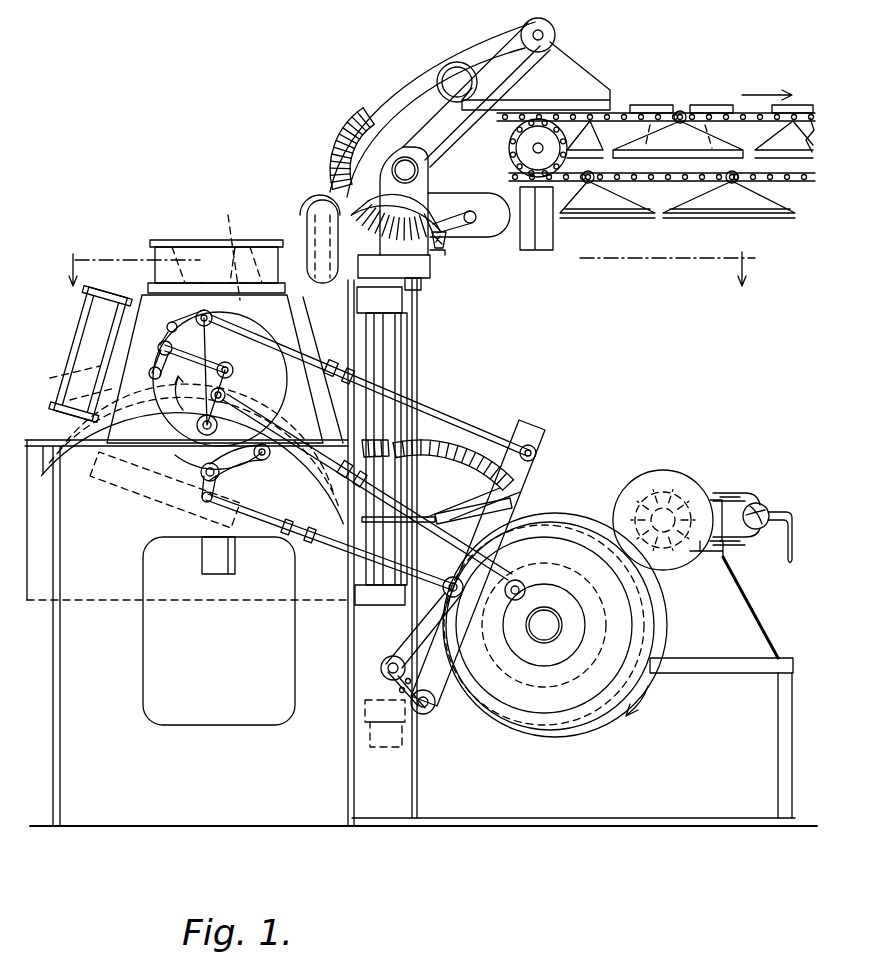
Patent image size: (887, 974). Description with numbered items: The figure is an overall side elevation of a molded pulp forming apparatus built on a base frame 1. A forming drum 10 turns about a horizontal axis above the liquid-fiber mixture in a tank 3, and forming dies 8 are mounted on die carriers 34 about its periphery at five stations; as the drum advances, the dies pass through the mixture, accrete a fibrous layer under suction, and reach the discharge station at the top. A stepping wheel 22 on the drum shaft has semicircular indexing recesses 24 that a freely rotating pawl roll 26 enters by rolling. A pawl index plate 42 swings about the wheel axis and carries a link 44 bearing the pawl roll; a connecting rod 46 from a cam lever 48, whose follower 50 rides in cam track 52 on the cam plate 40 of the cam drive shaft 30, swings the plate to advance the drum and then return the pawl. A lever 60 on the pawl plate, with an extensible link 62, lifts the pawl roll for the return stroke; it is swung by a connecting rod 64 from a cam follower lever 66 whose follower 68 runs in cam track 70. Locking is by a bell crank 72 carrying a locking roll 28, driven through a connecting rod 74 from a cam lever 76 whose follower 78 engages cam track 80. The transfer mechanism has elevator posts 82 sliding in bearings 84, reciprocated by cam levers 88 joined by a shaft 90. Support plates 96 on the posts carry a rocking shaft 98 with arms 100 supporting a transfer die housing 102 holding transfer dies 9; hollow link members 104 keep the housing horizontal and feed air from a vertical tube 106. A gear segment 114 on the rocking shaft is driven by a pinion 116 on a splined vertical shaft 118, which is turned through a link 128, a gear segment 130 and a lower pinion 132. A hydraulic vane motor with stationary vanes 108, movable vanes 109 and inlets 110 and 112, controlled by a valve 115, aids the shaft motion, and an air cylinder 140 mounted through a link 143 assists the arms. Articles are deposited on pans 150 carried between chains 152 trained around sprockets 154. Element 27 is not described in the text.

The base frame 1 is at (168, 818).
The tank 3 is at (137, 650).
The forming dies 8 is at (148, 300).
The transfer dies 9 is at (594, 104).
The forming drum 10 is at (244, 287).
The stepping wheel 22 is at (265, 355).
The indexing recesses 24 is at (219, 420).
The pawl roll 26 is at (154, 378).
The block 27 is at (230, 575).
The locking roll 28 is at (240, 467).
The cam drive shaft 30 is at (545, 632).
The die carriers 34 is at (215, 215).
The cam plate 40 is at (635, 721).
The pawl index plate 42 is at (235, 355).
The link 44 is at (177, 324).
The connecting rod 46 is at (449, 437).
The cam lever 48 is at (538, 467).
The follower 50 is at (472, 502).
The cam track 52 is at (541, 545).
The lever 60 is at (208, 428).
The extensible link 62 is at (195, 359).
The connecting rod 64 is at (367, 487).
The cam follower lever 66 is at (456, 708).
The cam follower 68 is at (517, 577).
The cam track 70 is at (562, 672).
The bell crank 72 is at (222, 482).
The connecting rod 74 is at (330, 542).
The cam lever 76 is at (388, 678).
The cam follower 78 is at (437, 642).
The cam track 80 is at (490, 713).
The elevator posts 82 is at (384, 366).
The bearings 84 is at (392, 303).
The cam levers 88 is at (600, 512).
The shaft 90 is at (664, 510).
The support plates 96 is at (480, 207).
The rocking shaft 98 is at (420, 178).
The arms 100 is at (490, 67).
The transfer die housing 102 is at (593, 83).
The hollow link members 104 is at (390, 133).
The vertical tube 106 is at (322, 198).
The stationary exterior vane structure 108 is at (692, 553).
The movable interior vane structure 109 is at (700, 506).
The inlets 110 is at (655, 498).
The inlets 112 is at (682, 500).
The gear segment 114 is at (358, 118).
The valve 115 is at (768, 508).
The pinion 116 is at (447, 250).
The vertical shaft 118 is at (420, 367).
The link 128 is at (434, 512).
The gear segment 130 is at (486, 455).
The lower pinion 132 is at (478, 456).
The air cylinder 140 is at (433, 283).
The link 143 is at (462, 231).
The pans 150 is at (798, 158).
The chains 152 is at (681, 111).
The sprockets 154 is at (580, 152).